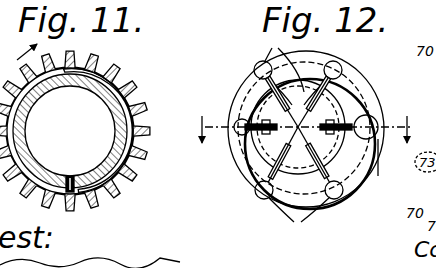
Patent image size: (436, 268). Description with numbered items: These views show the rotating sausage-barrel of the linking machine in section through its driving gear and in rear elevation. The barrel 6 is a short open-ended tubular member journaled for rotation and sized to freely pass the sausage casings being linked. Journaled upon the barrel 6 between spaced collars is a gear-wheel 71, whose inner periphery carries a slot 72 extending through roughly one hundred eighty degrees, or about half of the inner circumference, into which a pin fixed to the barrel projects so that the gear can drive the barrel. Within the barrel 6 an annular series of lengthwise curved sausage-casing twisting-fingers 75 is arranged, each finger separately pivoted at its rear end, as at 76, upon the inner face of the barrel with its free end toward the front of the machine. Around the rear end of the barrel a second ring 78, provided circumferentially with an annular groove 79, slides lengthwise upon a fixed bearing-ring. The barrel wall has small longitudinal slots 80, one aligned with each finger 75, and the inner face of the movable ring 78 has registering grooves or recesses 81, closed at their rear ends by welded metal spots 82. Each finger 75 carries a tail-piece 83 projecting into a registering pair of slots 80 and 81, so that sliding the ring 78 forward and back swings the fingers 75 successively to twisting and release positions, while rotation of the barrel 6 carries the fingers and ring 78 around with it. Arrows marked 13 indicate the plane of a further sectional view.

In FIG. 11, the barrel 6 is at (28, 163).
In FIG. 12, the barrel 6 is at (259, 151).
In FIG. 12, the section line 13 is at (306, 121).
In FIG. 11, the gear-wheel 71 is at (115, 71).
In FIG. 11, the slot 72 is at (126, 102).
In FIG. 11, the sausage-casing twisting-fingers 75 is at (74, 177).
In FIG. 12, the sausage-casing twisting-fingers 75 is at (298, 129).
In FIG. 12, the pivot 76 is at (297, 129).
In FIG. 12, the second ring 78 is at (318, 56).
In FIG. 12, the annular groove 79 is at (352, 92).
In FIG. 12, the slots 80 is at (252, 150).
In FIG. 12, the grooves or recesses 81 is at (299, 218).
In FIG. 12, the welded metal spots 82 is at (254, 70).
In FIG. 12, the tail-piece 83 is at (296, 69).